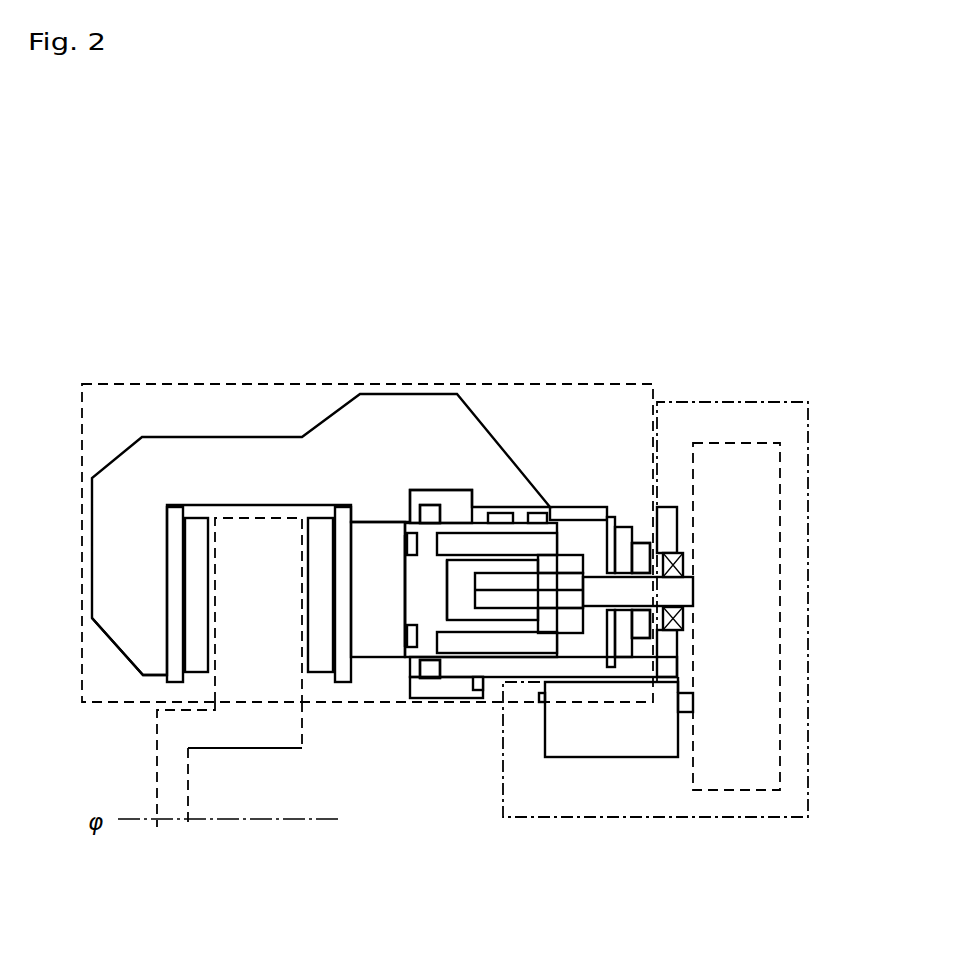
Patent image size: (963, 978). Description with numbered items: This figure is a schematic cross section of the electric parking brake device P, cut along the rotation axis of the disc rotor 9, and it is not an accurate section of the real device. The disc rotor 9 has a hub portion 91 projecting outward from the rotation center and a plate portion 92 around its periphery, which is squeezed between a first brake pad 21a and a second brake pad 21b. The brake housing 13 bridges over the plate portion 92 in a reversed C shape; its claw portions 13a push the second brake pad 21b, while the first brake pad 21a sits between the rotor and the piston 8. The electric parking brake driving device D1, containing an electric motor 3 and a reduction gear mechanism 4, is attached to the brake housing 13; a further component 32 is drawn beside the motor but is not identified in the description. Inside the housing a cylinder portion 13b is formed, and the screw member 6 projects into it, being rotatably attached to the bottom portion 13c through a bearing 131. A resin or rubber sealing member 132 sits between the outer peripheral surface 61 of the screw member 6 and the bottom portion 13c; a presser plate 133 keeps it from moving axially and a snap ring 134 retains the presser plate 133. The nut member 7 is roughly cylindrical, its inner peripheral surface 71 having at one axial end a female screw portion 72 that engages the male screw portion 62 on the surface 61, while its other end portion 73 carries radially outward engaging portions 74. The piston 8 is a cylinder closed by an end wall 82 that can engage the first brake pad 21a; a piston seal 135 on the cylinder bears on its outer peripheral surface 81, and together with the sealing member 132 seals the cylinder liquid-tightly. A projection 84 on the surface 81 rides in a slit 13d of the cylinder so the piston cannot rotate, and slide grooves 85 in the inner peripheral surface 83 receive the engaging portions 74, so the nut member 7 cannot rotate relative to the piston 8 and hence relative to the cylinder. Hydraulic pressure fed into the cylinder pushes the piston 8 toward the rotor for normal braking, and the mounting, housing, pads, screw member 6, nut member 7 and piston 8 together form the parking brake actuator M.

The brake housing 13 is at (155, 447).
The claw portion 13a is at (133, 638).
The cylinder portion 13b is at (420, 670).
The bottom portion 13c is at (682, 713).
The slit 13d is at (513, 520).
The piston 8 is at (352, 650).
The first brake pad 21a is at (318, 522).
The second brake pad 21b is at (198, 522).
The plate portion 92 is at (255, 523).
The hub portion 91 is at (160, 783).
The disc rotor 9 is at (263, 735).
The end wall 82 is at (365, 560).
The outer peripheral surface 81 is at (390, 565).
The nut member 7 is at (397, 660).
The slide groove 85 is at (455, 545).
The other end portion 73 is at (430, 560).
The female screw portion 72 is at (543, 505).
The outer peripheral surface 61 is at (570, 567).
The screw member 6 is at (620, 553).
The male screw portion 62 is at (540, 640).
The inner peripheral surface 71 is at (470, 580).
The inner peripheral surface 83 is at (508, 580).
The projection 84 is at (492, 590).
The engaging portion 74 is at (392, 512).
The piston seal 135 is at (405, 660).
The snap ring 134 is at (555, 640).
The presser plate 133 is at (607, 653).
The sealing member 132 is at (637, 545).
The bearing 131 is at (668, 553).
The electric motor 3 is at (662, 757).
The casing protrusion 32 is at (683, 715).
The reduction gear mechanism 4 is at (755, 425).
The electric parking brake device P is at (697, 330).
The parking brake actuator M is at (604, 386).
The electric parking brake driving device D1 is at (697, 400).